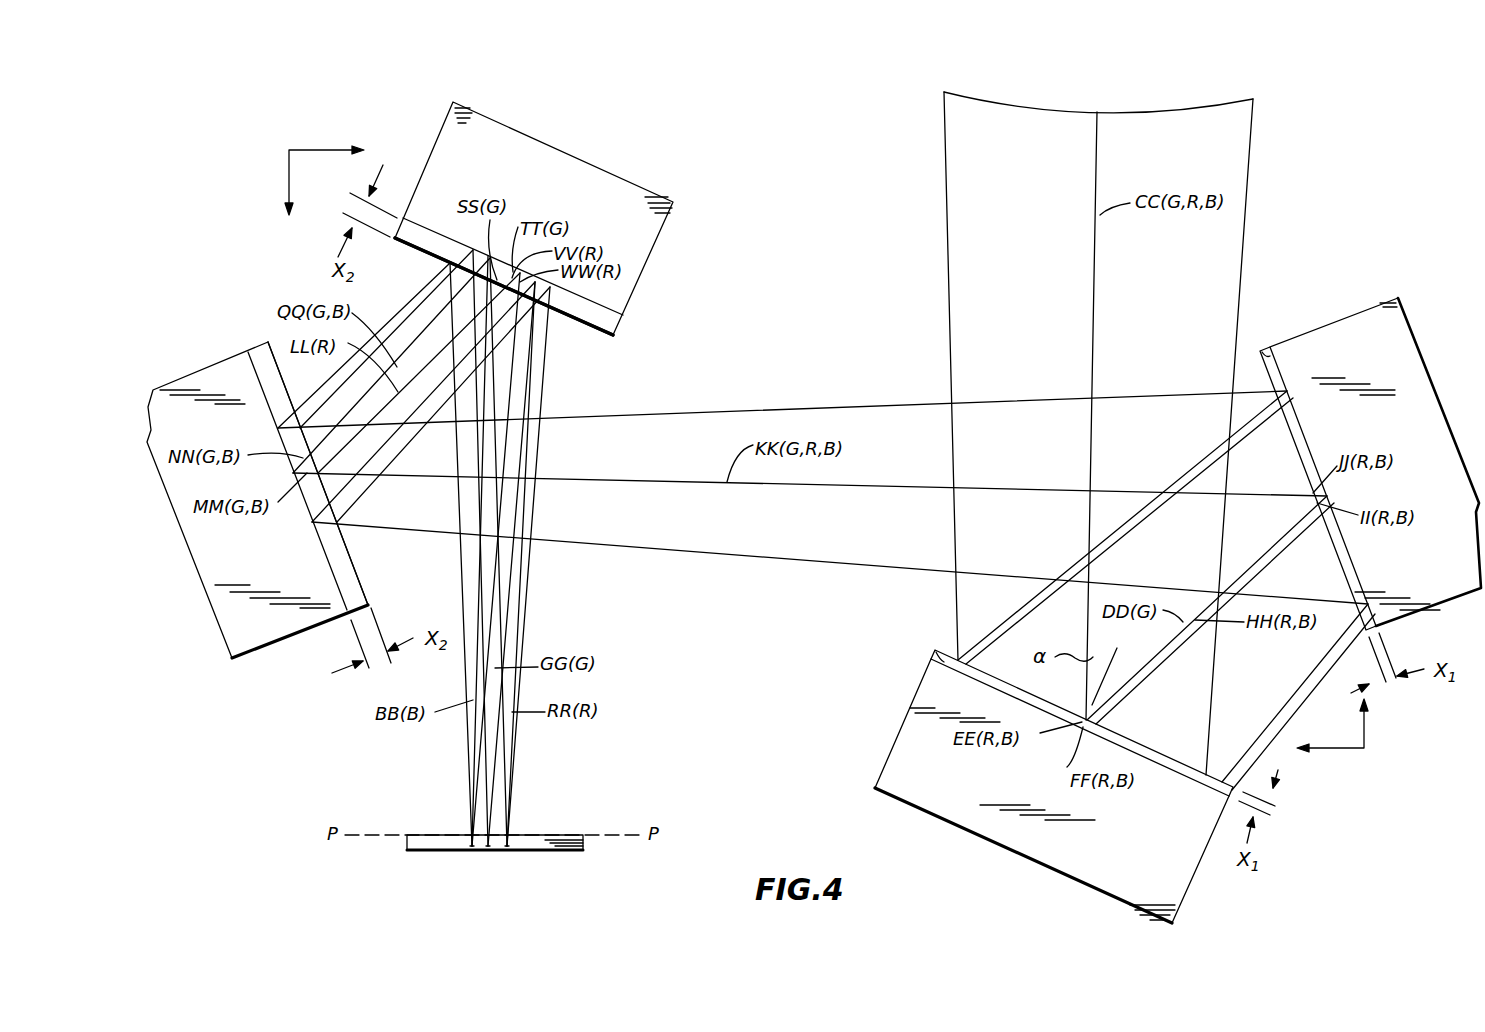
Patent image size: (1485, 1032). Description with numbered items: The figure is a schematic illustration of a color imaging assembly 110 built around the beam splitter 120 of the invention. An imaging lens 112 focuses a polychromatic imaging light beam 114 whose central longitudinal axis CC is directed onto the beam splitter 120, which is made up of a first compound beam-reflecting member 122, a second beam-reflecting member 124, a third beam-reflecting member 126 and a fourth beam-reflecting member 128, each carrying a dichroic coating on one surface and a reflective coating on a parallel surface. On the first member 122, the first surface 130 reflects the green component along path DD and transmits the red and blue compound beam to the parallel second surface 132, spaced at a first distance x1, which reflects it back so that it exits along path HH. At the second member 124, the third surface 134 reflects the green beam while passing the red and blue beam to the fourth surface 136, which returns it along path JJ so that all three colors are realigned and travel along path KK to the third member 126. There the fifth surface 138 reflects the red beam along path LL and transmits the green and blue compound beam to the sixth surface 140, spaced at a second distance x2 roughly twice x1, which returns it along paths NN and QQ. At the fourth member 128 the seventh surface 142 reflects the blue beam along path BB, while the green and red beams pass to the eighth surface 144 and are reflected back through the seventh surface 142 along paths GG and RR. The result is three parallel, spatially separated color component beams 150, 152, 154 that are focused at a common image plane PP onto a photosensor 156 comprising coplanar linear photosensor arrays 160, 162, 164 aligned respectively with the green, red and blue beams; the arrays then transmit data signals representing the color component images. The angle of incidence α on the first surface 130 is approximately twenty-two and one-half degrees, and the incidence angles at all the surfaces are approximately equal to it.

The color imaging assembly 110 is at (1302, 217).
The imaging lens 112 is at (1020, 103).
The polychromatic imaging light beam 114 is at (953, 220).
The beam splitter 120 is at (831, 452).
The first compound beam-reflecting member 122 is at (1175, 893).
The second beam-reflecting member 124 is at (1351, 317).
The third beam-reflecting member 126 is at (240, 643).
The fourth beam-reflecting member 128 is at (673, 202).
The first surface 130 is at (1135, 737).
The second surface 132 is at (948, 657).
The third surface 134 is at (1360, 634).
The fourth surface 136 is at (1262, 347).
The fifth surface 138 is at (363, 587).
The sixth surface 140 is at (333, 568).
The seventh surface 142 is at (590, 347).
The eighth surface 144 is at (623, 322).
The color component beam 150 is at (492, 752).
The color component beam 152 is at (513, 775).
The color component beam 154 is at (472, 753).
The photosensor 156 is at (407, 852).
The linear photosensor array 160 is at (485, 852).
The linear photosensor array 162 is at (502, 852).
The linear photosensor array 164 is at (472, 852).